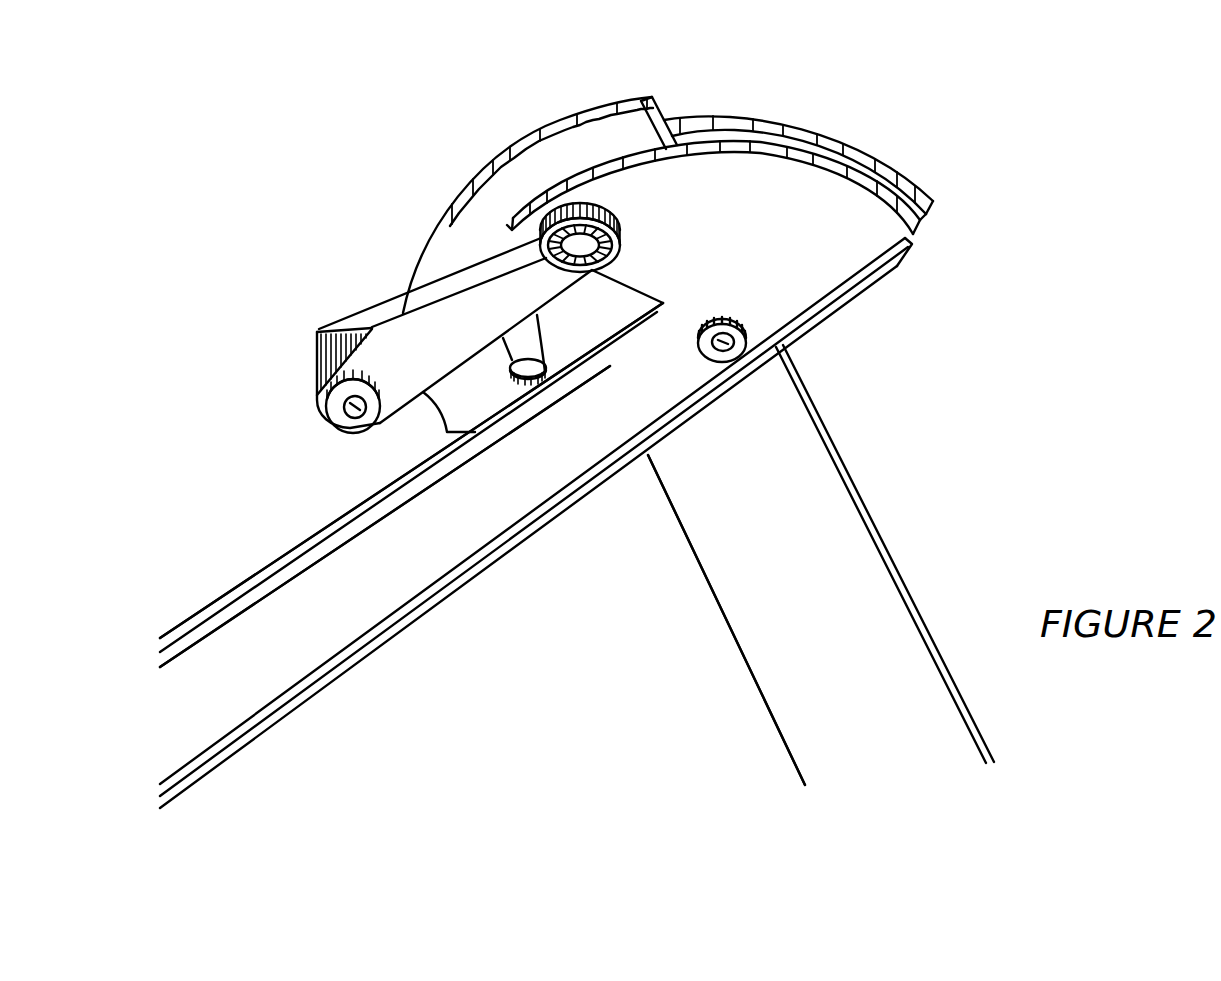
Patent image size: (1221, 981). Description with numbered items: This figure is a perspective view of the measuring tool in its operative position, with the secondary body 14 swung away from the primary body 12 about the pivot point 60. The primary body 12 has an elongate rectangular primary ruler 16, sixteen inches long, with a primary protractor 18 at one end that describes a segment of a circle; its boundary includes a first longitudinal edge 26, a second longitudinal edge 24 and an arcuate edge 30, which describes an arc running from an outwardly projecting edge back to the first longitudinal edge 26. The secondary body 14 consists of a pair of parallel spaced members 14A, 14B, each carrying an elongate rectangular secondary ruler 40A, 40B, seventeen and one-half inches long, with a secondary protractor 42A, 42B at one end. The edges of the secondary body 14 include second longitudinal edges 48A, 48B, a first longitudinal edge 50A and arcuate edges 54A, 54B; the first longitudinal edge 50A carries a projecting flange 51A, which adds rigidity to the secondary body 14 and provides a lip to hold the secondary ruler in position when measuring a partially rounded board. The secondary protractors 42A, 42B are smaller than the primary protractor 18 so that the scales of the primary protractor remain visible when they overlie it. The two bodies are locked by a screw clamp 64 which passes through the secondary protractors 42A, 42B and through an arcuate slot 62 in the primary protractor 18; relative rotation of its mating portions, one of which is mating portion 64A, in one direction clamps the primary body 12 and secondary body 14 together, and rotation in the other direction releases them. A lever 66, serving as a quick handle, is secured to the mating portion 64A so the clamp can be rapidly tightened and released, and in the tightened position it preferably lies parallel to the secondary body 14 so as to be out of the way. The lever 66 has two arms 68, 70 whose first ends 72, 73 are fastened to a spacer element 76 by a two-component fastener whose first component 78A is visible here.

The primary body 12 is at (840, 527).
The secondary body 14 is at (313, 632).
The parallel spaced member 14A is at (385, 516).
The parallel spaced member 14B is at (408, 482).
The primary ruler 16 is at (785, 660).
The primary protractor 18 is at (503, 193).
The second longitudinal edge 24 is at (690, 562).
The first longitudinal edge 26 is at (890, 567).
The arcuate edge 30 is at (557, 132).
The secondary ruler 40A is at (528, 537).
The secondary ruler 40B is at (396, 470).
The secondary protractor 42A is at (771, 213).
The secondary protractor 42B is at (798, 120).
The second longitudinal edge 48A is at (385, 516).
The second longitudinal edge 48B is at (410, 470).
The first longitudinal edge 50A is at (890, 299).
The projecting flange 51A is at (534, 521).
The arcuate edge 54A is at (782, 180).
The arcuate edge 54B is at (819, 159).
The pivot point 60 is at (790, 358).
The arcuate slot 62 is at (546, 380).
The screw clamp 64 is at (545, 243).
The mating portion 64A is at (458, 241).
The lever 66 is at (363, 307).
The arm 68 is at (317, 353).
The arm 70 is at (325, 315).
The first end 72 is at (345, 400).
The first end 73 is at (333, 332).
The spacer element 76 is at (317, 375).
The first component 78A is at (351, 423).